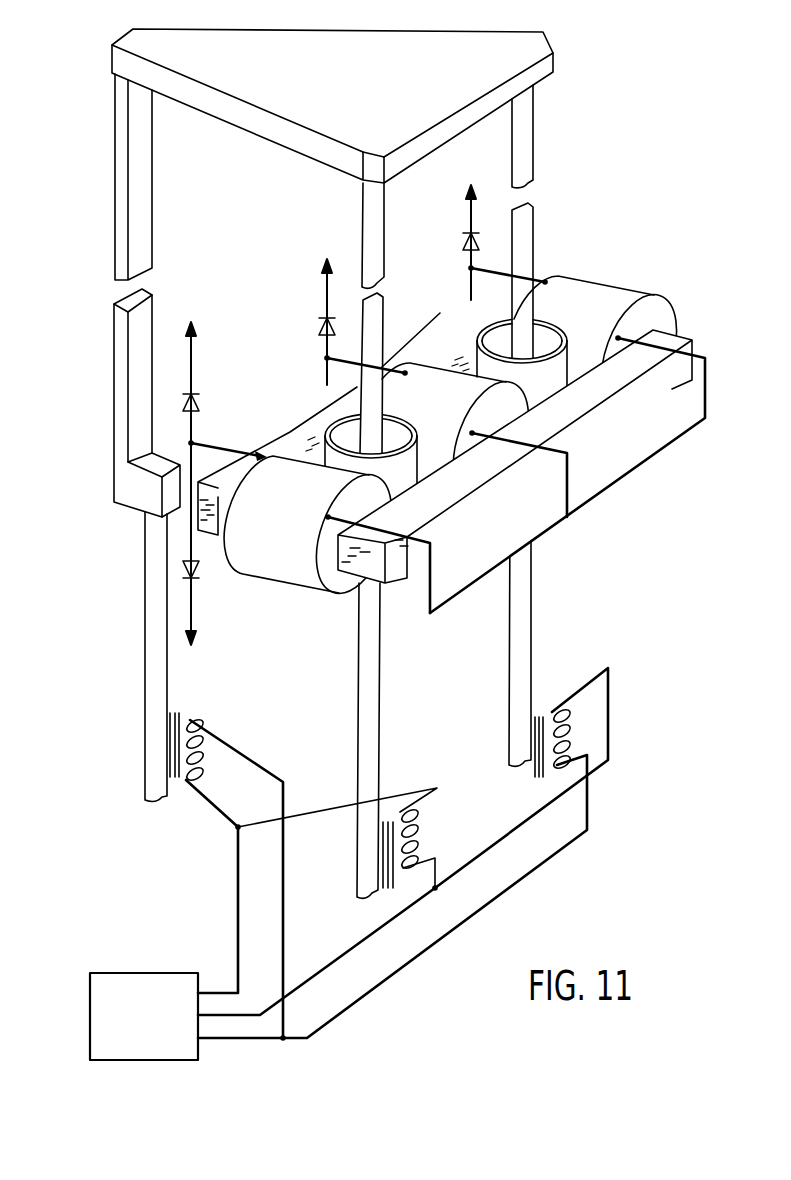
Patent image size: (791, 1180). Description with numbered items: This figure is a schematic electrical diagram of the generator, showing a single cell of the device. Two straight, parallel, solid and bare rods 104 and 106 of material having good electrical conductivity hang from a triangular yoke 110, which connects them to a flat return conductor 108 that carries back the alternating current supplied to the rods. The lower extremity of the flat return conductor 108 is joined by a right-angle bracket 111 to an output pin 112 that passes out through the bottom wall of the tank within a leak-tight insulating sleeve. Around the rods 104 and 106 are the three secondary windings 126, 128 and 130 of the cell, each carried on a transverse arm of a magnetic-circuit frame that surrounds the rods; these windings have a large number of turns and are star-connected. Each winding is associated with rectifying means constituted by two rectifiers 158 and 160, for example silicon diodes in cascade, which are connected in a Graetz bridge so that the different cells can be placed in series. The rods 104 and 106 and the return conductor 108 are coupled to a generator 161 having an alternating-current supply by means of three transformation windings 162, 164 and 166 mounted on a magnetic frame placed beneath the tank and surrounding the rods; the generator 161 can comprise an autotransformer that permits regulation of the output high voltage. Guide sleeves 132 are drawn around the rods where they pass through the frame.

The rod 104 is at (362, 632).
The rod 106 is at (518, 598).
The flat conductor 108 is at (147, 255).
The triangular yoke 110 is at (248, 146).
The right-angle bracket 111 is at (133, 513).
The output pin 112 is at (145, 662).
The secondary winding 126 is at (302, 495).
The secondary winding 128 is at (452, 419).
The secondary winding 130 is at (590, 316).
The guide sleeve 132 is at (400, 420).
The rectifier 158 is at (213, 385).
The rectifier 160 is at (207, 575).
The generator 161 is at (151, 1026).
The transformation winding 162 is at (403, 787).
The transformation winding 164 is at (562, 690).
The transformation winding 166 is at (195, 710).